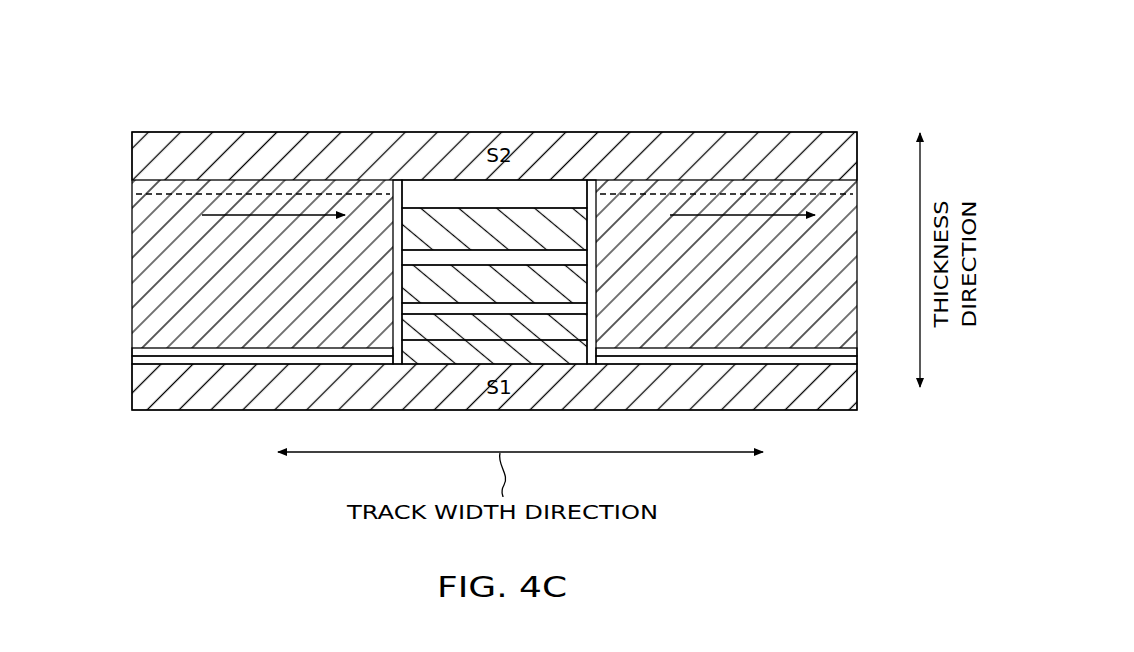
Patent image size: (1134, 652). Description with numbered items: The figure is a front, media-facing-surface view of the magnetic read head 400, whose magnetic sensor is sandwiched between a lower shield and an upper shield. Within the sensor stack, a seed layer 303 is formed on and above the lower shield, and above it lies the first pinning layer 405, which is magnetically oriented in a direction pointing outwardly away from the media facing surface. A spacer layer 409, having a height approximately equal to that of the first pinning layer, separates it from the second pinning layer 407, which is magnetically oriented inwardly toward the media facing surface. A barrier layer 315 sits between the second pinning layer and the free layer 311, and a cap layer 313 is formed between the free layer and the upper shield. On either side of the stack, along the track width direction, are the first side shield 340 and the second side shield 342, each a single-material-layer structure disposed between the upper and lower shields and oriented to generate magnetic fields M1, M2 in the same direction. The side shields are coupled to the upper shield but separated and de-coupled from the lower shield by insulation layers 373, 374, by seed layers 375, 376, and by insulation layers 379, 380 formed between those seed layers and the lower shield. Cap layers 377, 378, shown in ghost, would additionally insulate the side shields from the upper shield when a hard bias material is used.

The magnetic read head 400 is at (782, 97).
The cap layer 313 is at (548, 192).
The barrier layer 315 is at (415, 259).
The free layer 311 is at (478, 239).
The second pinning layer 407 is at (478, 292).
The spacer layer 409 is at (578, 308).
The first pinning layer 405 is at (578, 330).
The seed layer 303 is at (438, 352).
The first side shield 340 is at (283, 300).
The second side shield 342 is at (728, 300).
The insulation layer 373 is at (398, 354).
The insulation layer 374 is at (595, 360).
The seed layer 375 is at (133, 352).
The insulation layer 379 is at (133, 359).
The seed layer 376 is at (855, 352).
The insulation layer 380 is at (855, 359).
The cap layer 377 is at (140, 187).
The cap layer 378 is at (853, 189).
The magnetic field M1 is at (240, 216).
The magnetic field M2 is at (745, 217).